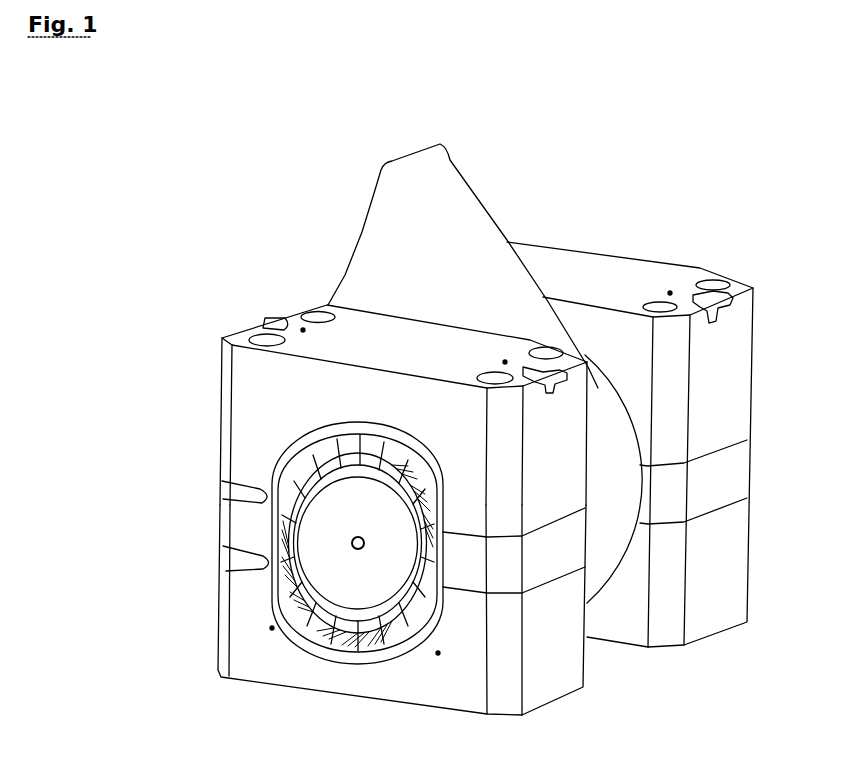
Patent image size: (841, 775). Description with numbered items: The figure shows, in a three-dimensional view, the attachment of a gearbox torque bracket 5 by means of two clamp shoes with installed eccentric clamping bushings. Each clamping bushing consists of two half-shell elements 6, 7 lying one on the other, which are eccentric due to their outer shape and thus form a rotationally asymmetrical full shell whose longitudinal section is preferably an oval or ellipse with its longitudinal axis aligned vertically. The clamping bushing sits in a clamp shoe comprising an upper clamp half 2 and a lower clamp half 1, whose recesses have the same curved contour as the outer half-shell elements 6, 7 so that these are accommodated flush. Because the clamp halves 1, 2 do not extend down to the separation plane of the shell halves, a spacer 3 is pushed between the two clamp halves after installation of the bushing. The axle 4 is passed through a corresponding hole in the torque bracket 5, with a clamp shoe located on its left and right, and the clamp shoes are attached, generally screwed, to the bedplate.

The lower clamp half 1 is at (233, 622).
The upper clamp half 2 is at (240, 415).
The spacer 3 is at (227, 521).
The axle 4 is at (375, 578).
The gearbox torque bracket 5 is at (410, 265).
The half-shell element 6 is at (348, 638).
The half-shell element 7 is at (373, 437).